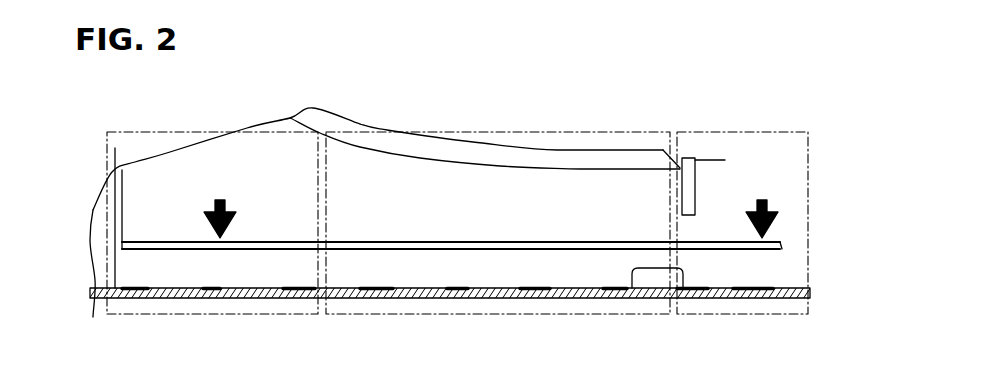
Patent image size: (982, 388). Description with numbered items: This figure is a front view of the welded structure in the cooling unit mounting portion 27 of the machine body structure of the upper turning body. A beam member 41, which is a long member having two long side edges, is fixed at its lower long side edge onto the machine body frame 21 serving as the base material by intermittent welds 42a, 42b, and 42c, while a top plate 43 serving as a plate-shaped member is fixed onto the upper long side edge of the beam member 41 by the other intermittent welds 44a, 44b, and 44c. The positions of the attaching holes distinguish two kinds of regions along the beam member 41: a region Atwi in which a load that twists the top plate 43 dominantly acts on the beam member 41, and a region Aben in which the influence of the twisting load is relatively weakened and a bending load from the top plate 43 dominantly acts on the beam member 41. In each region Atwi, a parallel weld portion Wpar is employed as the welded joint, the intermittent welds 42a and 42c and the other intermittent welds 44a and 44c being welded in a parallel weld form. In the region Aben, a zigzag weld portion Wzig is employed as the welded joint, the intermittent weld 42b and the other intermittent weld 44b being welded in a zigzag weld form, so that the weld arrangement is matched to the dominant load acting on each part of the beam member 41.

The machine body frame 21 is at (469, 300).
The cooling unit mounting portion 27 is at (517, 241).
The beam member 41 is at (492, 268).
The intermittent weld 42a is at (281, 289).
The intermittent weld 42b is at (457, 289).
The intermittent weld 42c is at (744, 289).
The top plate 43 is at (563, 243).
The other intermittent weld 44a is at (212, 240).
The other intermittent weld 44b is at (492, 245).
The other intermittent weld 44c is at (701, 241).
The parallel weld portion Wpar is at (126, 250).
The zigzag weld portion Wzig is at (342, 250).
The region in which a twisting load dominantly acts Atwi is at (476, 132).
The region in which a bending load dominantly acts Aben is at (516, 132).